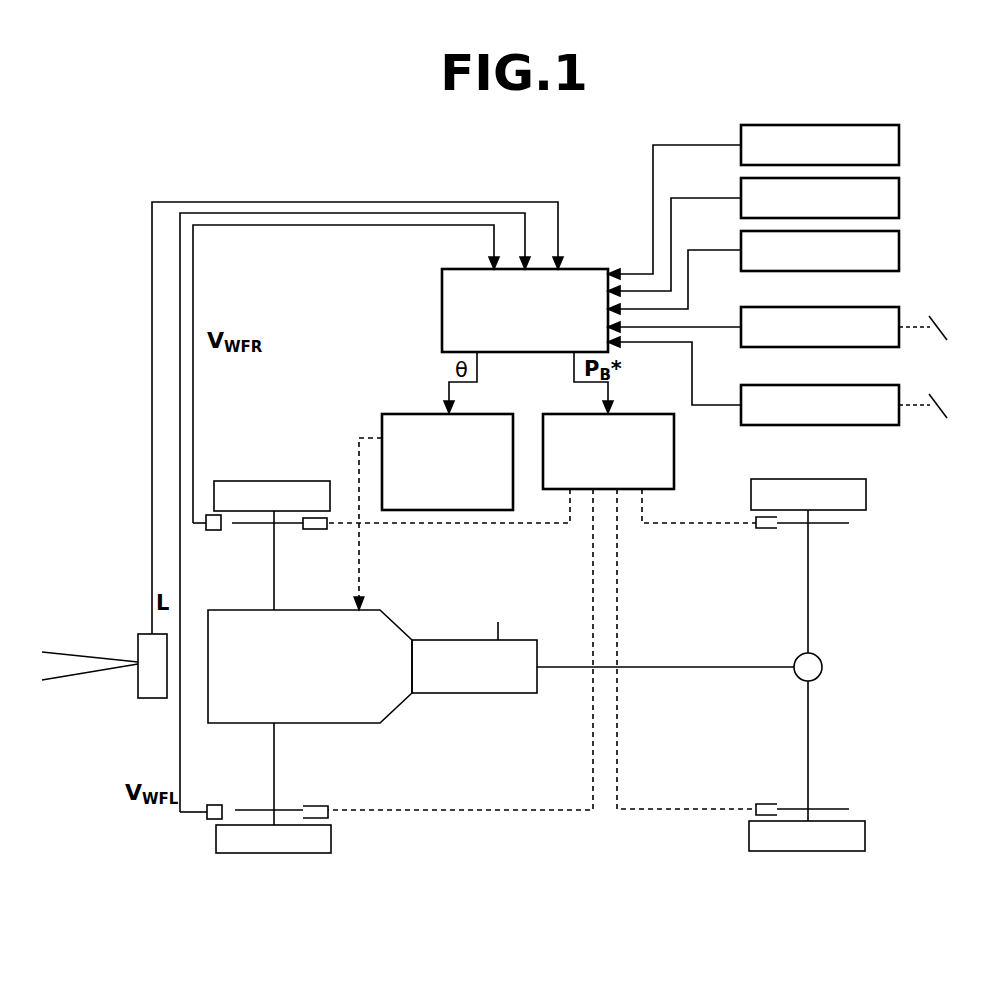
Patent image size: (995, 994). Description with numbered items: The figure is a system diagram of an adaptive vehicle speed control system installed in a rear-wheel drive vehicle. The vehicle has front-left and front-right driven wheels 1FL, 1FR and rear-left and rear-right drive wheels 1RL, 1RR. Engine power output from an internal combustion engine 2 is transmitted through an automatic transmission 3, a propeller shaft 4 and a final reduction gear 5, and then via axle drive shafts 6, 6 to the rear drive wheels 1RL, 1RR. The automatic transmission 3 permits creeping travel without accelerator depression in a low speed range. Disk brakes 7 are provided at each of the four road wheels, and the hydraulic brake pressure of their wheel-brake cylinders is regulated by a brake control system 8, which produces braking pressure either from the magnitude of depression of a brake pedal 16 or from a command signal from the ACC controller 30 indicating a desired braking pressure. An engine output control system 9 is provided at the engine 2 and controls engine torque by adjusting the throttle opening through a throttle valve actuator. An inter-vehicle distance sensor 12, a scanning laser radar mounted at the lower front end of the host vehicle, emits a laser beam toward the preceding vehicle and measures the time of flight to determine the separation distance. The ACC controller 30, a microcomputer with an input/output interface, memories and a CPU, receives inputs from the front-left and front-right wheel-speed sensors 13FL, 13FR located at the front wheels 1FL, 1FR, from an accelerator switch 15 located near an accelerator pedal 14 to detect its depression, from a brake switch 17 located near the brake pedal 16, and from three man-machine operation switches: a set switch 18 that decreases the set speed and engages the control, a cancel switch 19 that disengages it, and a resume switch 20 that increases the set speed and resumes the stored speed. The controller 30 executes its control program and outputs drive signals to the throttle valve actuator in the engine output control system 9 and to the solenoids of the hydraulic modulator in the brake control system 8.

The ACC controller 30 is at (442, 306).
The resume switch 20 is at (899, 145).
The set switch 18 is at (899, 198).
The cancel switch 19 is at (899, 250).
The accelerator switch 15 is at (883, 307).
The brake switch 17 is at (883, 385).
The accelerator pedal 14 is at (936, 323).
The brake pedal 16 is at (936, 401).
The engine output control system 9 is at (467, 510).
The brake control system 8 is at (674, 450).
The front-right driven wheel 1FR is at (265, 481).
The front-left driven wheel 1FL is at (250, 854).
The rear-right drive wheel 1RR is at (808, 479).
The rear-left drive wheel 1RL is at (808, 852).
The disk brake 7 is at (282, 525).
The front-right wheel-speed sensor 13FR is at (213, 531).
The front-left wheel-speed sensor 13FL is at (213, 804).
The inter-vehicle distance sensor 12 is at (152, 699).
The internal combustion engine 2 is at (360, 724).
The automatic transmission 3 is at (430, 694).
The propeller shaft 4 is at (693, 666).
The final reduction gear 5 is at (822, 667).
The axle drive shaft 6 is at (808, 606).